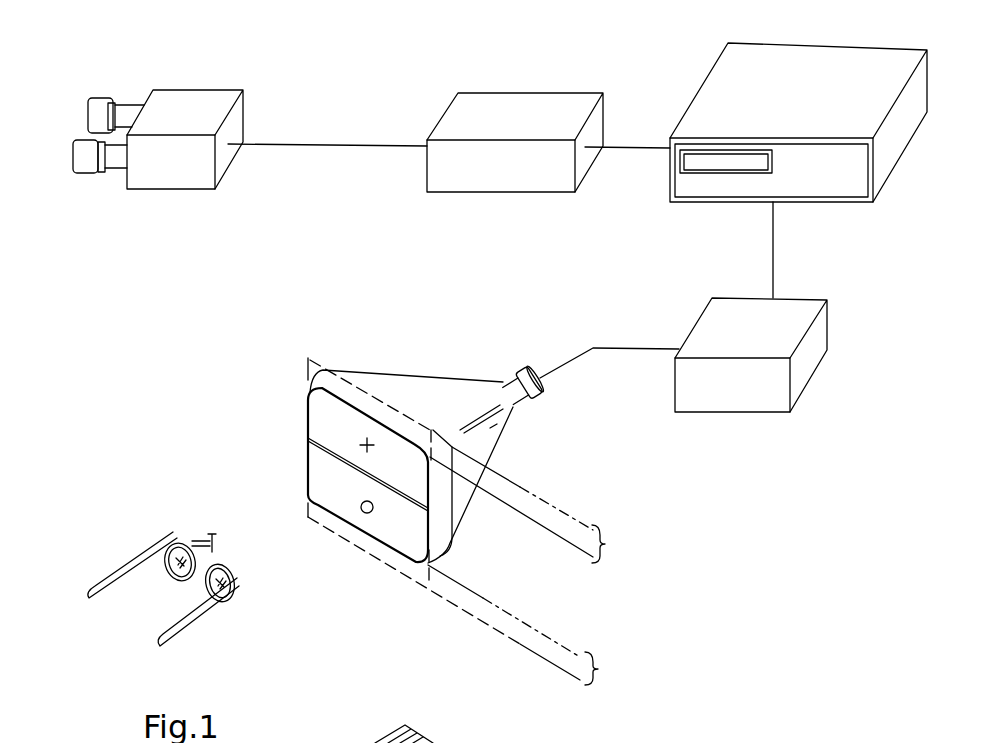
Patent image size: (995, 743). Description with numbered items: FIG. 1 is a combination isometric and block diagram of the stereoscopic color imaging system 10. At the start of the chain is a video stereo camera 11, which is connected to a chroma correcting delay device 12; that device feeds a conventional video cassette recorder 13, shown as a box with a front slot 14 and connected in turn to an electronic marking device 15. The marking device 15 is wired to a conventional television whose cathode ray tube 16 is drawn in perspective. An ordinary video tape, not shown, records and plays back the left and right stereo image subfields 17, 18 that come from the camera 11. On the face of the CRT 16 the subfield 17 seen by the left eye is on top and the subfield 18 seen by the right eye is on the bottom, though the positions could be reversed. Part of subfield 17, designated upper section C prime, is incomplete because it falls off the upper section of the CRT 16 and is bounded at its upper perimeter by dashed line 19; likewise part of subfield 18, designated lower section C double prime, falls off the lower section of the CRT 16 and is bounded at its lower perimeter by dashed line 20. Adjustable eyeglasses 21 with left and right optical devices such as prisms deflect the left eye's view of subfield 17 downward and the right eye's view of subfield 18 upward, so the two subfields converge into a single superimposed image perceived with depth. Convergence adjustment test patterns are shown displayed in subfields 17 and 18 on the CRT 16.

The stereoscopic color imaging system 10 is at (160, 338).
The video stereo camera 11 is at (213, 92).
The chroma correcting delay device 12 is at (520, 102).
The video cassette recorder 13 is at (803, 68).
The control panel slot 14 is at (692, 160).
The electronic marking device 15 is at (808, 362).
The cathode ray tube 16 is at (412, 392).
The left stereo image subfield 17 is at (327, 428).
The right stereo image subfield 18 is at (327, 483).
The dashed line 19 is at (434, 430).
The dashed line 20 is at (427, 588).
The viewing spectacles 21 is at (177, 537).